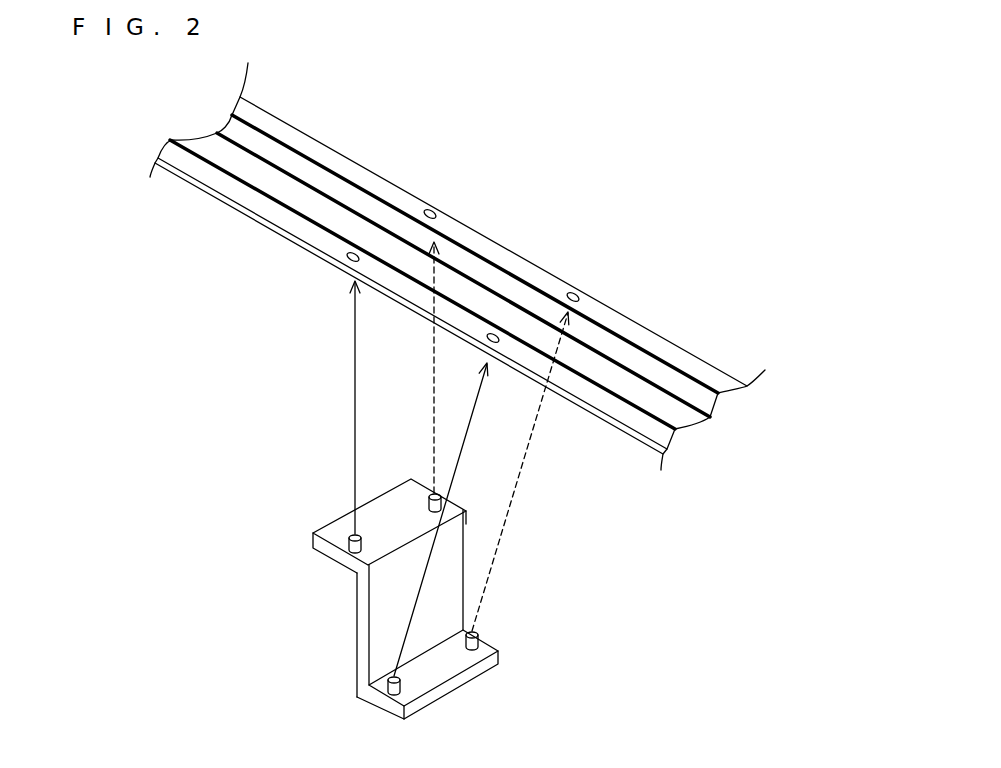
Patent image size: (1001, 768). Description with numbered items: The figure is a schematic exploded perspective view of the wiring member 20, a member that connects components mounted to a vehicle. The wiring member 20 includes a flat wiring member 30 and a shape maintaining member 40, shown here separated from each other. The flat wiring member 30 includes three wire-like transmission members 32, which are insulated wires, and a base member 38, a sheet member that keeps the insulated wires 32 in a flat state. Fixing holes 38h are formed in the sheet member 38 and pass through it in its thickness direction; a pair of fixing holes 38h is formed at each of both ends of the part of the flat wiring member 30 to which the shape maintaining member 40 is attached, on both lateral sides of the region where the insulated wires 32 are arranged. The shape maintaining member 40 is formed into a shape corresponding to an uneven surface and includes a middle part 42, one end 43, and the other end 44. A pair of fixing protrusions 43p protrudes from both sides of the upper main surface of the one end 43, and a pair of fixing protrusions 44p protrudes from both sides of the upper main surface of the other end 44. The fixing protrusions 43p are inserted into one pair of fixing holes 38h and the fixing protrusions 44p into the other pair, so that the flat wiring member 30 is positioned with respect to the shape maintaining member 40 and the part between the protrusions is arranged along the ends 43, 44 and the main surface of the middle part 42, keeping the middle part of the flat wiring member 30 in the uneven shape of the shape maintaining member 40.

The wiring member 20 is at (377, 100).
The flat wiring member 30 is at (398, 183).
The wire-like transmission member 32 is at (658, 420).
The base member 38 is at (630, 318).
The fixing hole 38h is at (437, 217).
The shape maintaining member 40 is at (317, 520).
The middle part 42 is at (357, 635).
The one end 43 is at (312, 540).
The fixing protrusion 43p is at (364, 541).
The other end 44 is at (440, 704).
The fixing protrusion 44p is at (388, 686).